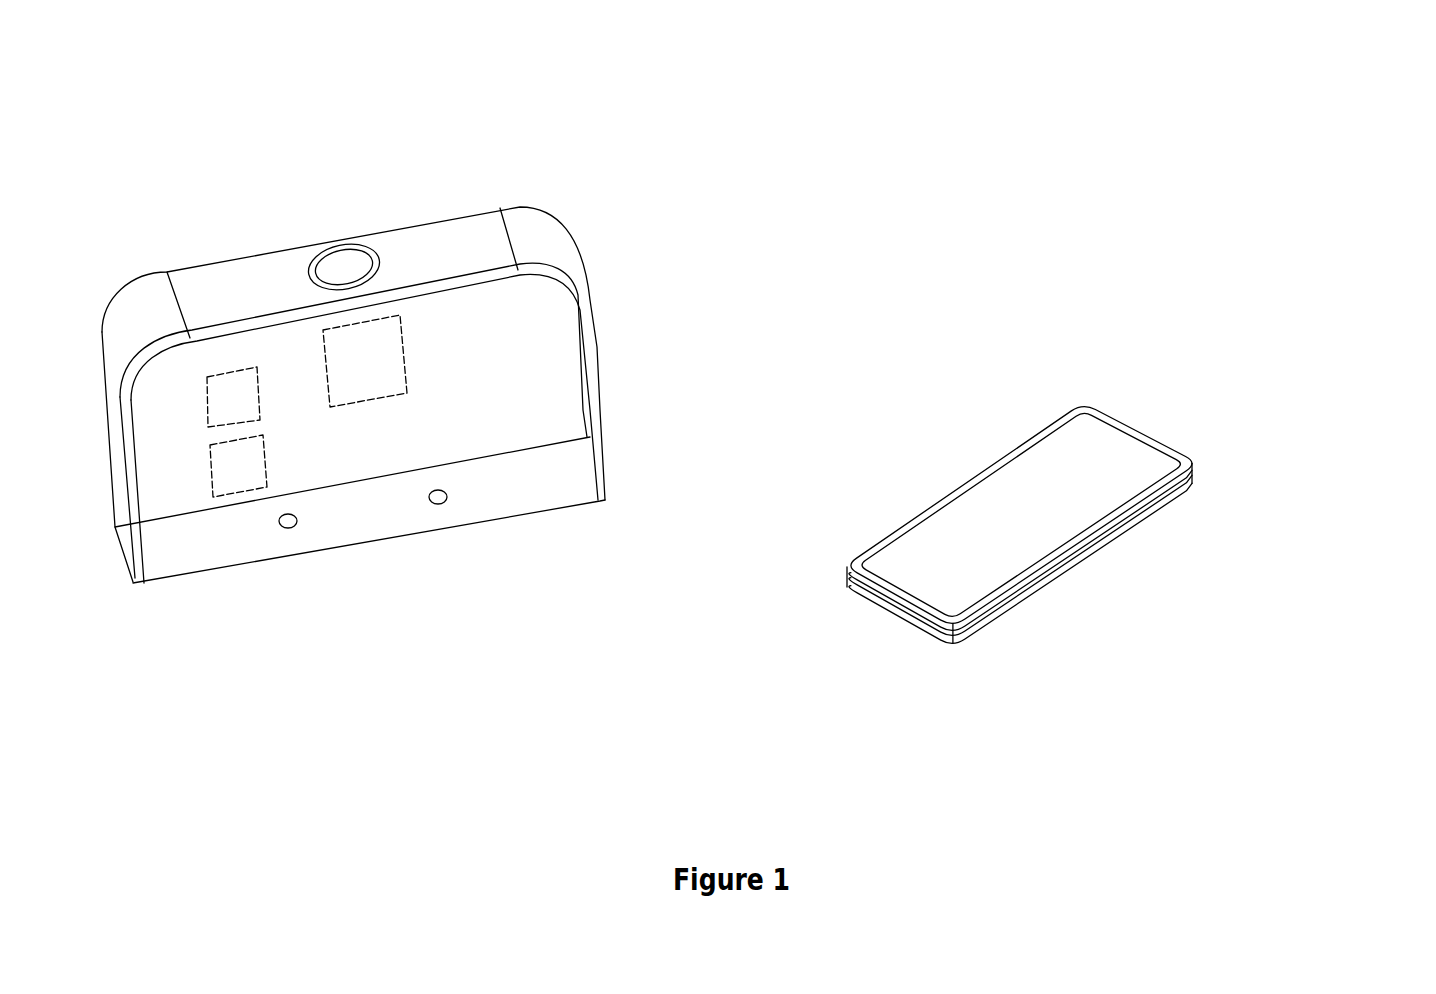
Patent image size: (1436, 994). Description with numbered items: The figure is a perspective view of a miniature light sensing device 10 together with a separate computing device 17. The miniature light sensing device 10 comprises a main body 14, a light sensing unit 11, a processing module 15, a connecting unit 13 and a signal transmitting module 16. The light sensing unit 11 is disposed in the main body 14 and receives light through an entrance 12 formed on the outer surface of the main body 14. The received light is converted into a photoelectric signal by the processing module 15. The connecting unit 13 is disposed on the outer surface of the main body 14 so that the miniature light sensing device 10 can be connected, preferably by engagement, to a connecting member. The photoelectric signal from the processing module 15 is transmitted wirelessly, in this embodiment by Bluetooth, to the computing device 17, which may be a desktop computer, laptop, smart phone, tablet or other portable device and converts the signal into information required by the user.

The miniature light sensing device 10 is at (600, 210).
The light sensing unit 11 is at (388, 327).
The entrance 12 is at (332, 262).
The connecting unit 13 is at (289, 528).
The main body 14 is at (493, 407).
The processing module 15 is at (227, 463).
The signal transmitting module 16 is at (220, 400).
The computing device 17 is at (1123, 458).